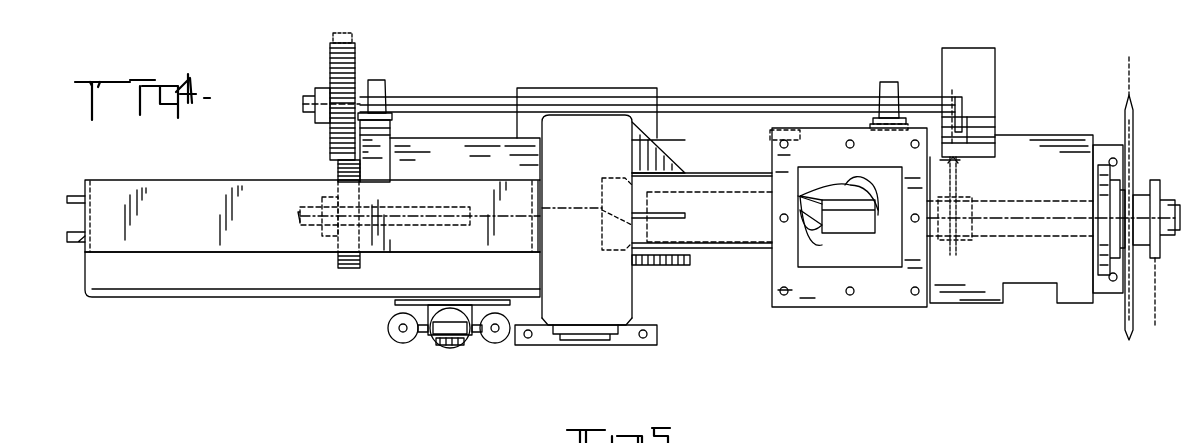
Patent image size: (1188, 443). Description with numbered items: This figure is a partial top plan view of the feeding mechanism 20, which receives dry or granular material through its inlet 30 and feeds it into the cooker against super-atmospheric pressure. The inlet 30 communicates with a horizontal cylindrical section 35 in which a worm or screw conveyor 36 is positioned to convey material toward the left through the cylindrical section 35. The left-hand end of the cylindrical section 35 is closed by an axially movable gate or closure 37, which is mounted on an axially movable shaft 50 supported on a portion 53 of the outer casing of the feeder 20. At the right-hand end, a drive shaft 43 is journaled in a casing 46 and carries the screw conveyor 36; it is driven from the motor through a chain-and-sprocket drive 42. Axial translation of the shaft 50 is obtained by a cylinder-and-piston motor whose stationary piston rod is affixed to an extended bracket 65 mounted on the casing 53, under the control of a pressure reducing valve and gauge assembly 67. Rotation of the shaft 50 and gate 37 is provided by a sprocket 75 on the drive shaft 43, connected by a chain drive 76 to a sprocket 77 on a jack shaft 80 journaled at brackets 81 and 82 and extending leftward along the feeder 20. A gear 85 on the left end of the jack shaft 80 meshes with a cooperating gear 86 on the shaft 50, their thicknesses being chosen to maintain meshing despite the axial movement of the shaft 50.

The feeding mechanism 20 is at (148, 325).
The inlet 30 is at (874, 260).
The horizontal cylindrical section 35 is at (714, 175).
The worm or screw conveyor 36 is at (822, 245).
The gate or closure 37 is at (615, 250).
The chain-and-sprocket drive 42 is at (1135, 145).
The drive shaft 43 is at (1033, 212).
The casing 46 is at (1037, 135).
The axially movable shaft 50 is at (556, 208).
The portion of the outer casing 53 is at (585, 125).
The extended bracket 65 is at (216, 180).
The pressure reducing valve and gauge assembly 67 is at (452, 345).
The sprocket 75 is at (962, 252).
The chain drive 76 is at (960, 170).
The sprocket 77 is at (960, 90).
The jack shaft 80 is at (765, 95).
The bracket 81 is at (378, 80).
The bracket 82 is at (890, 82).
The gear 85 is at (330, 56).
The gear 86 is at (338, 266).